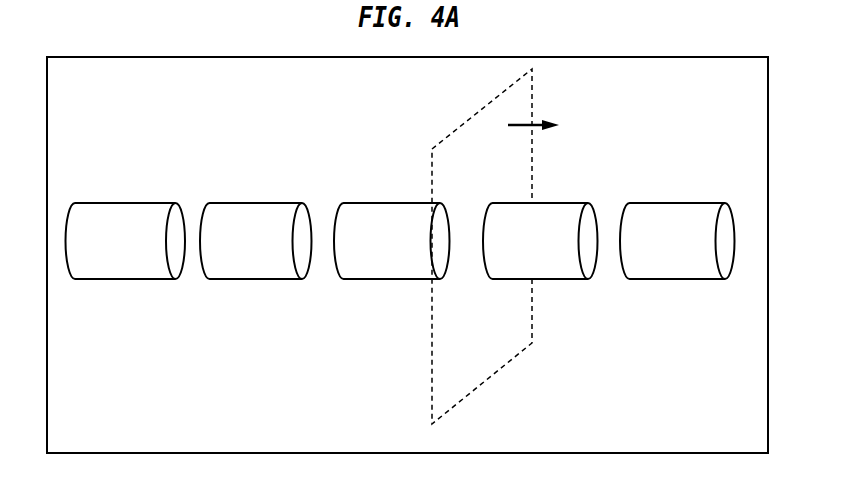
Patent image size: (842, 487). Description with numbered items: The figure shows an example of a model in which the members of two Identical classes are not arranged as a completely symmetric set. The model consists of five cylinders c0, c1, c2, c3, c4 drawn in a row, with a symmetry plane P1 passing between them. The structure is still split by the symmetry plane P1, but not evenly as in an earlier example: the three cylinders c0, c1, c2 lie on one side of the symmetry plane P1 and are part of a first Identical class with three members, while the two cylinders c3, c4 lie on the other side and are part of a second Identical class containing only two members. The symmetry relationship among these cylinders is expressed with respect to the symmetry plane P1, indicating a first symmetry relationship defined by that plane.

The cylinder c0 is at (126, 241).
The cylinder c1 is at (256, 241).
The cylinder c2 is at (392, 241).
The cylinder c3 is at (540, 241).
The cylinder c4 is at (677, 241).
The symmetry plane P1 is at (495, 246).